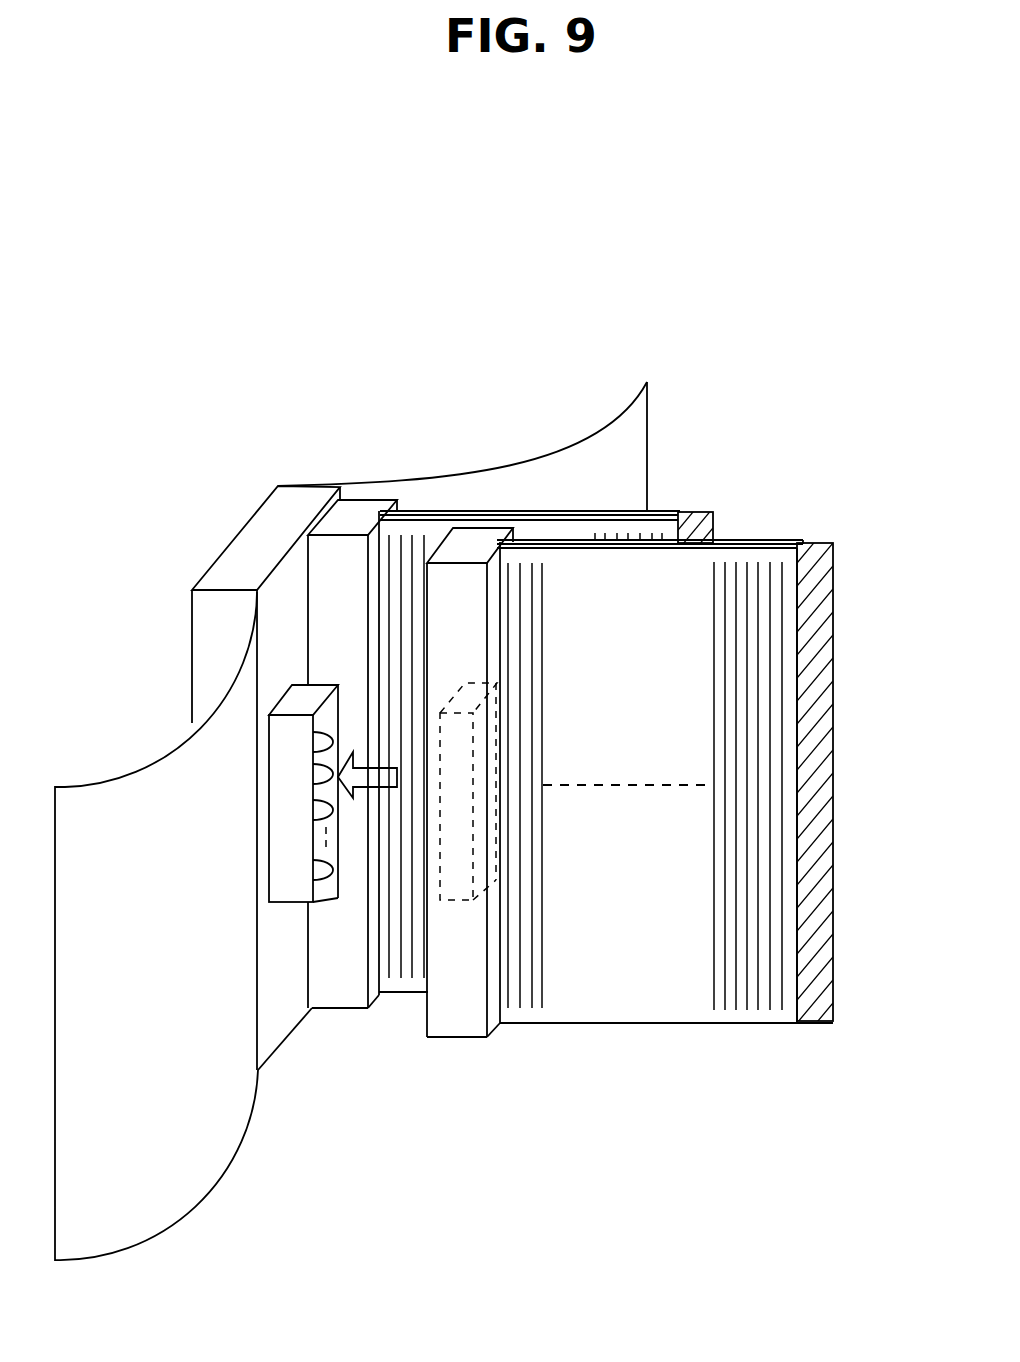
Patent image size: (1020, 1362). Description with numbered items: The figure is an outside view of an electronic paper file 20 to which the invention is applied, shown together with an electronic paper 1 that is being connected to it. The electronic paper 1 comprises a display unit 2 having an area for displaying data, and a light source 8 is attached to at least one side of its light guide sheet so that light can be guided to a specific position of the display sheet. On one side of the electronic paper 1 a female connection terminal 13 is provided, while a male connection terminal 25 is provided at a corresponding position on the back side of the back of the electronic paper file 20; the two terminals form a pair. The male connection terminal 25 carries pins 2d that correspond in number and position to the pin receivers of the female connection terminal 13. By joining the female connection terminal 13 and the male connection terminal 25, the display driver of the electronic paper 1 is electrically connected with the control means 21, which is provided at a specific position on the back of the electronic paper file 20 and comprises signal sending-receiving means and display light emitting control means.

The electronic paper 1 is at (588, 1030).
The display unit 2 is at (685, 1023).
The pins 2d is at (333, 867).
The light source 8 is at (820, 587).
The female connection terminal 13 is at (462, 733).
The electronic paper file 20 is at (320, 470).
The control means 21 is at (172, 655).
The male connection terminal 25 is at (292, 902).